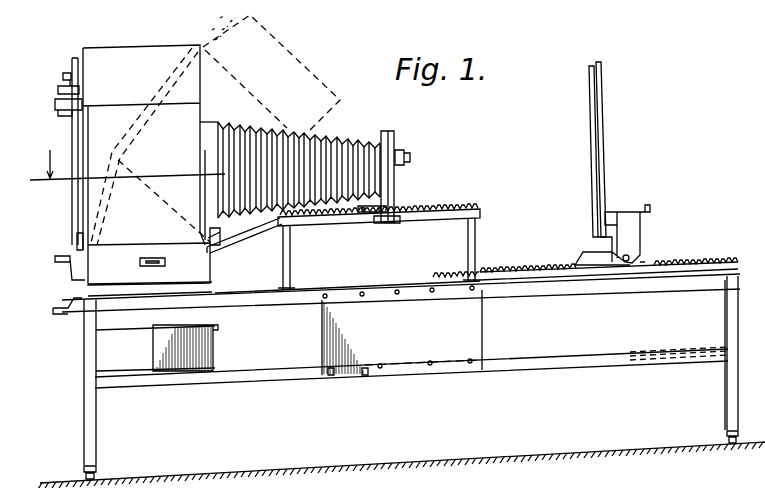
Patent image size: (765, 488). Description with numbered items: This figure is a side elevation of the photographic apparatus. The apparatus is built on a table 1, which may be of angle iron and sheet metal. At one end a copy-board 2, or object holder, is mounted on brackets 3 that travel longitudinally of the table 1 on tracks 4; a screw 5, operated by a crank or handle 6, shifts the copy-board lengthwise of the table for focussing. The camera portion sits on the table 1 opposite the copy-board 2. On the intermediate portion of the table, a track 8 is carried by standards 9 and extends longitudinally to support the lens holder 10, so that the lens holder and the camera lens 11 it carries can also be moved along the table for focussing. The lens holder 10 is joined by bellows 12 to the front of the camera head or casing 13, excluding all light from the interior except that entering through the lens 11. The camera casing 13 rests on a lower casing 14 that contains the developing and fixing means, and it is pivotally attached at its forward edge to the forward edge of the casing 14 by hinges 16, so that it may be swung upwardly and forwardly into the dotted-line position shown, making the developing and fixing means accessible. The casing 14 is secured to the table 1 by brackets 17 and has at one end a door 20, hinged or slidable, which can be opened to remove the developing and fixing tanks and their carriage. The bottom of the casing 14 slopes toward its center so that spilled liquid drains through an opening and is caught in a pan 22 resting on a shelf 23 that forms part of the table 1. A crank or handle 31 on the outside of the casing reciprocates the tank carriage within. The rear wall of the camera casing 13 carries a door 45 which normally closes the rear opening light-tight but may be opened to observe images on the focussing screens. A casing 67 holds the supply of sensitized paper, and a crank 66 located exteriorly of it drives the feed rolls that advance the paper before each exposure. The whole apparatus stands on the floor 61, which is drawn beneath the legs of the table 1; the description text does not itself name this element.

The table 1 is at (722, 305).
The copy-board 2 is at (603, 150).
The brackets 3 is at (645, 234).
The tracks 4 is at (690, 264).
The screw 5 is at (392, 265).
The crank or handle 6 is at (56, 321).
The track 8 is at (379, 229).
The standards 9 is at (292, 270).
The lens holder 10 is at (397, 147).
The camera lens 11 is at (411, 160).
The bellows 12 is at (335, 130).
The camera head or casing 13 is at (135, 144).
The casing 14 is at (210, 276).
The hinges 16 is at (225, 238).
The brackets 17 is at (212, 296).
The door 20 is at (149, 264).
The pan 22 is at (215, 343).
The shelf 23 is at (258, 372).
The crank or handle 31 is at (62, 244).
The door 45 is at (73, 196).
The floor 61 is at (401, 465).
The crank 66 is at (57, 101).
The casing 67 is at (150, 147).